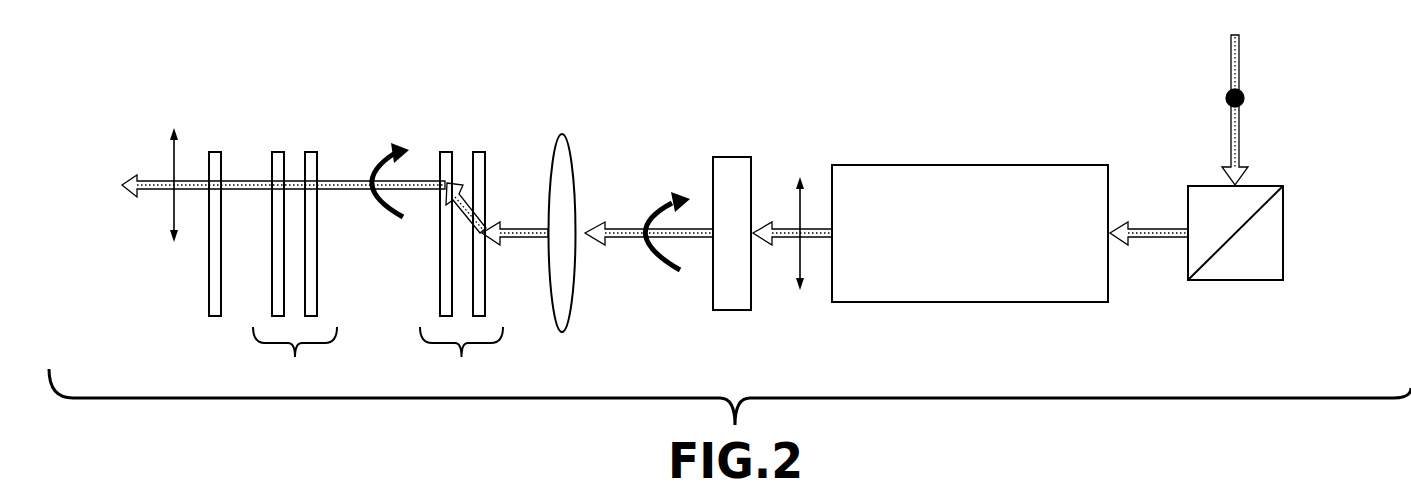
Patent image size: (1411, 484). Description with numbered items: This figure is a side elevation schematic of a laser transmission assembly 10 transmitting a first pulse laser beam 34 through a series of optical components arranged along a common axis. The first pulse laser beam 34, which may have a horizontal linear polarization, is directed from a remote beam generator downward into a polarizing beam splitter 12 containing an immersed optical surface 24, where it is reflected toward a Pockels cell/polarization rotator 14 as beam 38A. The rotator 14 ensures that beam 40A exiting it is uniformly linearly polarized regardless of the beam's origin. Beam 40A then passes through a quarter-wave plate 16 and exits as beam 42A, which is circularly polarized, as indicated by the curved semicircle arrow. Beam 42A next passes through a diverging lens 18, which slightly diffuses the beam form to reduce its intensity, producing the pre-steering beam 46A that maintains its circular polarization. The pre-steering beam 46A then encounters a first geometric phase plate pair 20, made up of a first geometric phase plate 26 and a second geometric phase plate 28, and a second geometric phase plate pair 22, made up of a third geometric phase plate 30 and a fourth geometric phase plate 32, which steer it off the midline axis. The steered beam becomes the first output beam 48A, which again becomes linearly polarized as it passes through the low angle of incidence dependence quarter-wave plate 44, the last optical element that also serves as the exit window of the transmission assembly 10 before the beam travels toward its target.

The transmission assembly 10 is at (1032, 101).
The polarizing beam splitter 12 is at (1269, 170).
The Pockels cell/polarization rotator 14 is at (988, 246).
The quarter-wave plate 16 is at (728, 155).
The diverging lens 18 is at (570, 157).
The first geometric phase plate pair 20 is at (461, 356).
The second geometric phase plate pair 22 is at (295, 356).
The optical surface 24 is at (1235, 232).
The first geometric phase plate 26 is at (478, 150).
The second geometric phase plate 28 is at (447, 150).
The third geometric phase plate 30 is at (312, 150).
The fourth geometric phase plate 32 is at (279, 150).
The first pulse laser beam 34 is at (1240, 63).
The beam 38A is at (1148, 227).
The beam 40A is at (785, 227).
The beam 42A is at (627, 229).
The low angle of incidence dependence quarter-wave plate 44 is at (217, 150).
The pre-steering beam 46A is at (518, 227).
The first output beam 48A is at (157, 180).